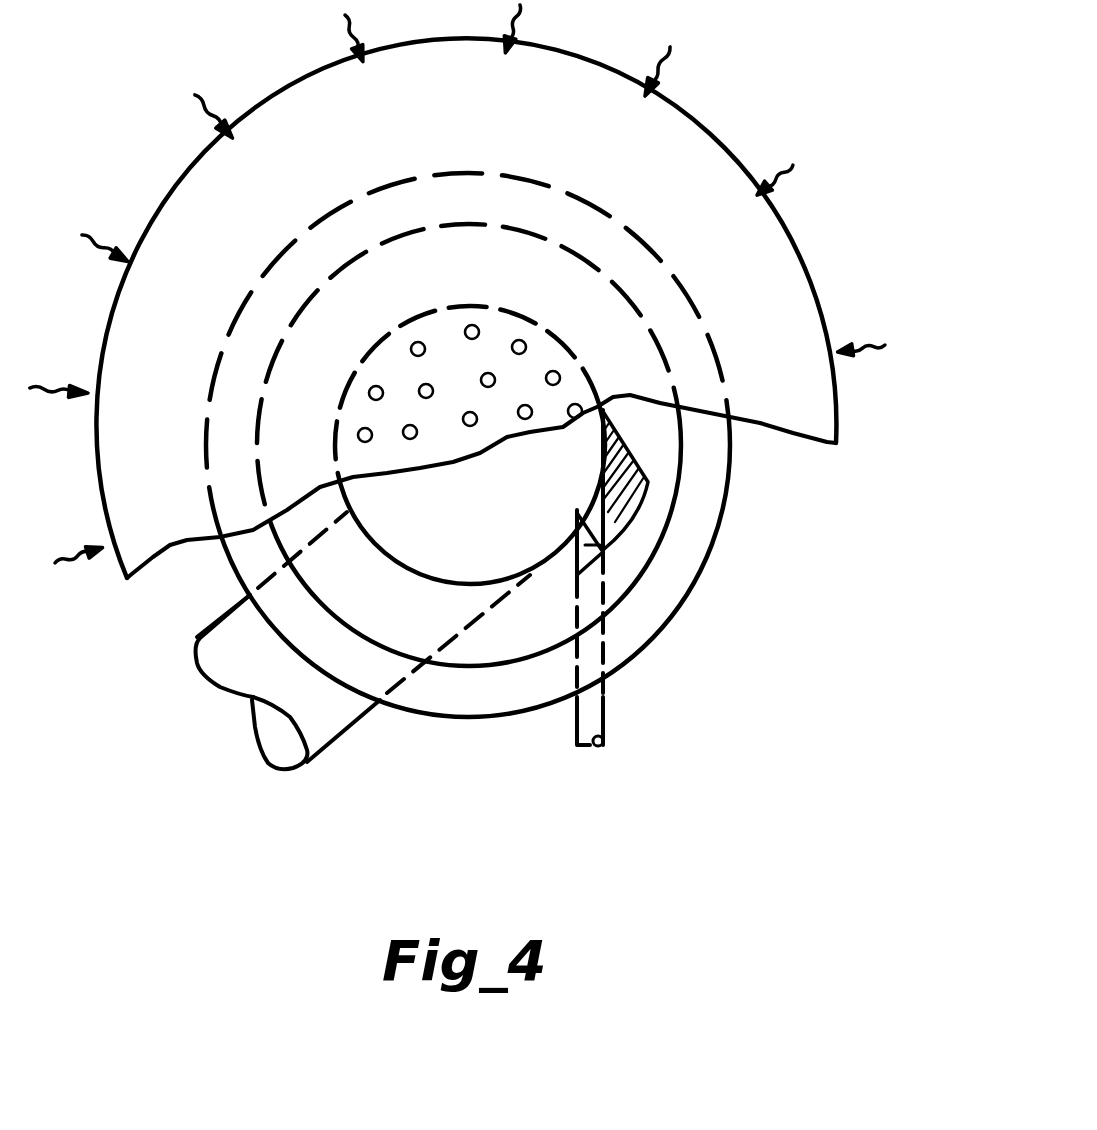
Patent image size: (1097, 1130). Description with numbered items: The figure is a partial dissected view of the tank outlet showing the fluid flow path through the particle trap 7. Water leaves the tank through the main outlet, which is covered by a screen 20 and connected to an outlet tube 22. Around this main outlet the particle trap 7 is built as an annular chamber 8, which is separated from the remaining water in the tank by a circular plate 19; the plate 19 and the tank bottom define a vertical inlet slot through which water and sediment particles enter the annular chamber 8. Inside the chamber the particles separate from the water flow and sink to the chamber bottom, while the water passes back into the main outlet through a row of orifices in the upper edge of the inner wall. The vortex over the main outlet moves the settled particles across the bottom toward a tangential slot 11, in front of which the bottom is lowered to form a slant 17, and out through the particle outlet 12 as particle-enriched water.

The particle trap 7 is at (743, 575).
The annular chamber 8 is at (502, 640).
The slot 11 is at (603, 550).
The particle outlet 12 is at (590, 717).
The slant 17 is at (650, 487).
The circular plate 19 is at (668, 147).
The screen 20 is at (533, 368).
The outlet tube 22 is at (327, 717).